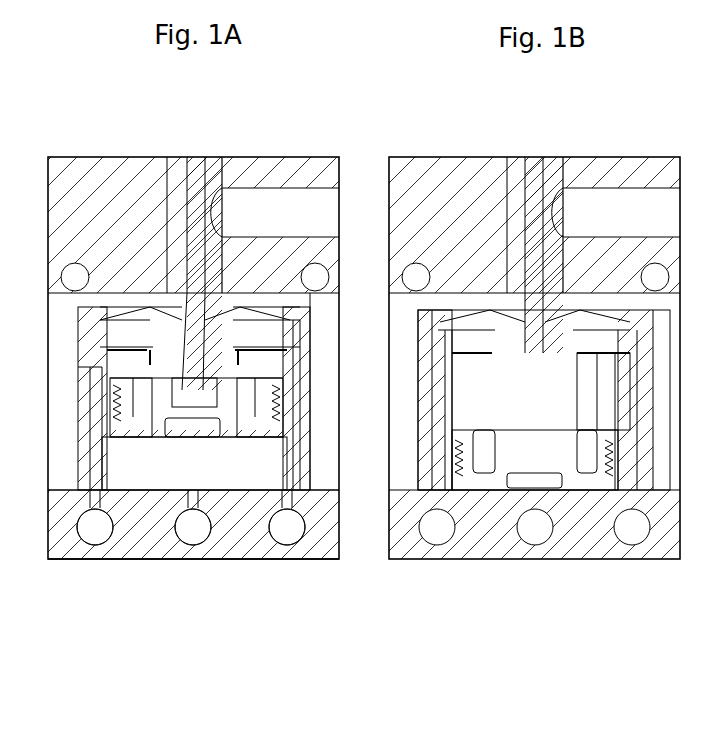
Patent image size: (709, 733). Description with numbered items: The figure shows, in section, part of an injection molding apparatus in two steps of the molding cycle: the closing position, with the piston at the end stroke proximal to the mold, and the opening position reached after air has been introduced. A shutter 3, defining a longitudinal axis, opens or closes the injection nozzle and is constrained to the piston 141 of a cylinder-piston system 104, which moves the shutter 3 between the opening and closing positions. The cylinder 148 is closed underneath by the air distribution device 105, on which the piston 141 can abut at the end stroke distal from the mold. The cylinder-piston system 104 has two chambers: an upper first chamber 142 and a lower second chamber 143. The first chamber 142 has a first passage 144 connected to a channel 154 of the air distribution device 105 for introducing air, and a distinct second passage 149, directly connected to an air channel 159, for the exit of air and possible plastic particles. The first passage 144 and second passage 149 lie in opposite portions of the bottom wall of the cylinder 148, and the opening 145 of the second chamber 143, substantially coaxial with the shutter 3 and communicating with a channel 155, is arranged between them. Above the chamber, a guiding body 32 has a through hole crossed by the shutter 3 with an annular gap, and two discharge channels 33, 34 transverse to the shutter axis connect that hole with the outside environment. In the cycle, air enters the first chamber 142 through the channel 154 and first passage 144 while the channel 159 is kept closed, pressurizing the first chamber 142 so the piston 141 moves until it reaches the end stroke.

In FIG. 1A, the shutter 3 is at (200, 195).
In FIG. 1A, the guiding body 32 is at (180, 210).
In FIG. 1A, the discharge channel 33 is at (163, 315).
In FIG. 1A, the discharge channel 34 is at (228, 305).
In FIG. 1A, the piston 141 is at (250, 433).
In FIG. 1A, the first chamber 142 is at (130, 362).
In FIG. 1B, the first chamber 142 is at (603, 390).
In FIG. 1A, the second chamber 143 is at (218, 467).
In FIG. 1A, the first passage 144 is at (95, 477).
In FIG. 1A, the opening 145 is at (195, 468).
In FIG. 1B, the cylinder 148 is at (422, 433).
In FIG. 1A, the second passage 149 is at (292, 490).
In FIG. 1A, the cylinder-piston system 104 is at (312, 434).
In FIG. 1A, the air distribution device 105 is at (135, 540).
In FIG. 1A, the channel 154 is at (88, 527).
In FIG. 1A, the channel 155 is at (193, 522).
In FIG. 1A, the air channel 159 is at (287, 523).